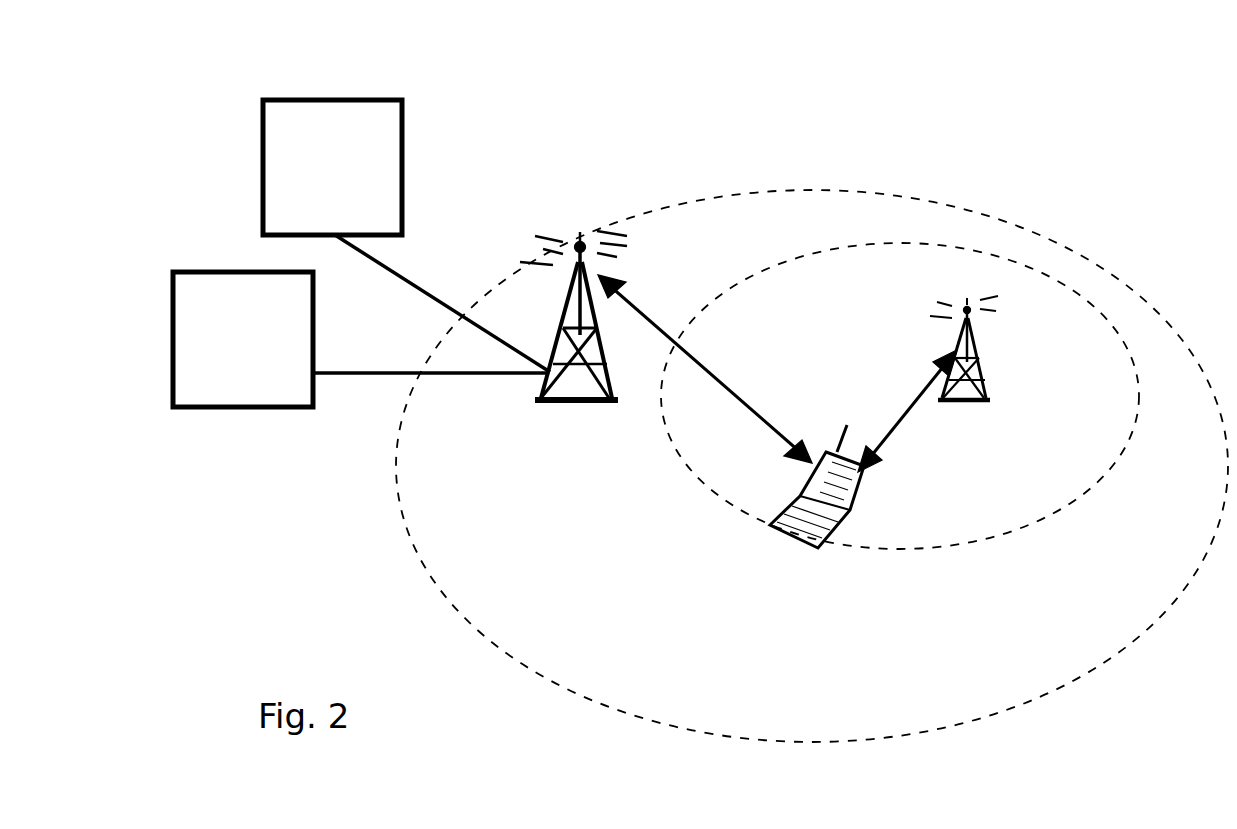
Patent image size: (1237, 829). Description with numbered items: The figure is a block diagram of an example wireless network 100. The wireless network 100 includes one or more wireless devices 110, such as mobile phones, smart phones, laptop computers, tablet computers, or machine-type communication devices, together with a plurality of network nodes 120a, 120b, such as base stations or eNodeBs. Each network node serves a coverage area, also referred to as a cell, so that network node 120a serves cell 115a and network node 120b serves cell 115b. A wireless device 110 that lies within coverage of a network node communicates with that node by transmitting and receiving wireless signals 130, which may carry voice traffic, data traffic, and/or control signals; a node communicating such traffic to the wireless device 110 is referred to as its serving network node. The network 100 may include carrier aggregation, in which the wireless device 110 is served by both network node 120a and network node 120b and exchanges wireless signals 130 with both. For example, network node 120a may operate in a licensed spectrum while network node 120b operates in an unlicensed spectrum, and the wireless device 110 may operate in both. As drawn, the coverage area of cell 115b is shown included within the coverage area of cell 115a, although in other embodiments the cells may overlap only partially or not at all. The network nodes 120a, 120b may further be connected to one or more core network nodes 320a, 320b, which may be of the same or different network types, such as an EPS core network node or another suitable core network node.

The wireless communication system 100 is at (778, 137).
The mobile device 110 is at (795, 542).
The coverage area of first base station 115a is at (812, 466).
The coverage area of second base station 115b is at (900, 396).
The first base station 120a is at (560, 338).
The second base station 120b is at (945, 335).
The communication link 130 is at (777, 373).
The first network entity 320a is at (360, 339).
The second network entity 320b is at (406, 236).